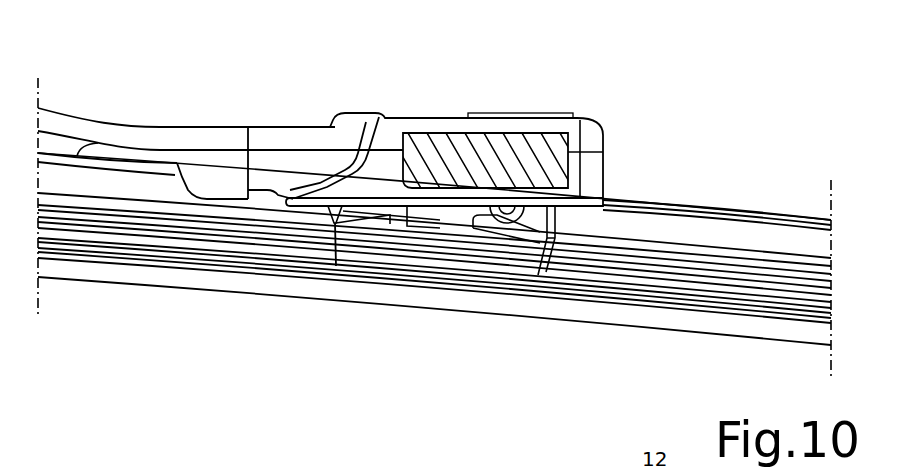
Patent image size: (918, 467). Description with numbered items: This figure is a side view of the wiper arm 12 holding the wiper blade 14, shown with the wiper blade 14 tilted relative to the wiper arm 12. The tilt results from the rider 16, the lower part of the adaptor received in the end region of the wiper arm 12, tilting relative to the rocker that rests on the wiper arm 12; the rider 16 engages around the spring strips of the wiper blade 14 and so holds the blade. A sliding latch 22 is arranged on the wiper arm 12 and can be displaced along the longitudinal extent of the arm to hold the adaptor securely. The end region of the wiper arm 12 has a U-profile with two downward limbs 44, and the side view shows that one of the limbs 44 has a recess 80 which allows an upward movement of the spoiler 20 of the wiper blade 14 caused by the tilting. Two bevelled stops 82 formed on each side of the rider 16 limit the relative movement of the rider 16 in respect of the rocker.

The wiper arm 12 is at (117, 98).
The wiper blade 14 is at (763, 198).
The rider 16 is at (428, 216).
The spoiler 20 is at (102, 187).
The sliding latch 22 is at (556, 86).
The limbs 44 is at (272, 170).
The recess 80 is at (182, 165).
The stops 82 is at (390, 216).